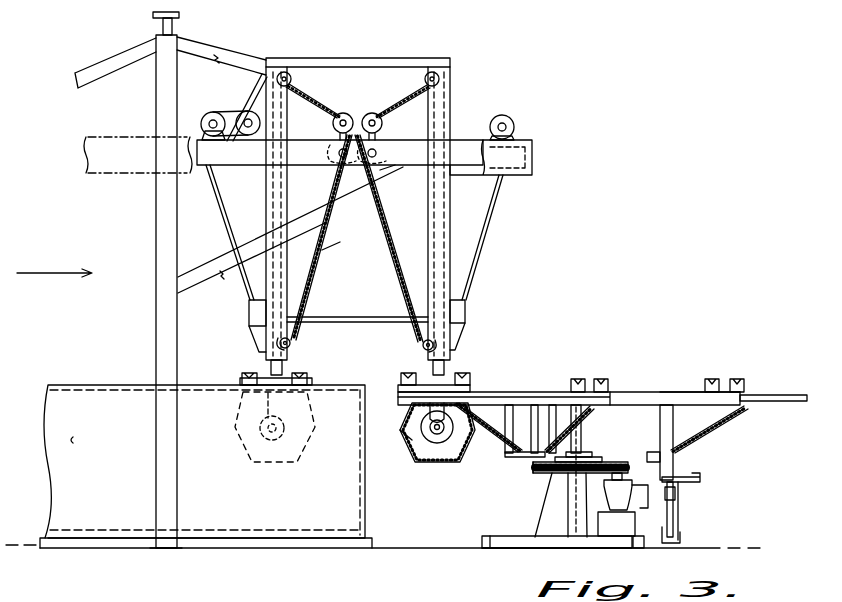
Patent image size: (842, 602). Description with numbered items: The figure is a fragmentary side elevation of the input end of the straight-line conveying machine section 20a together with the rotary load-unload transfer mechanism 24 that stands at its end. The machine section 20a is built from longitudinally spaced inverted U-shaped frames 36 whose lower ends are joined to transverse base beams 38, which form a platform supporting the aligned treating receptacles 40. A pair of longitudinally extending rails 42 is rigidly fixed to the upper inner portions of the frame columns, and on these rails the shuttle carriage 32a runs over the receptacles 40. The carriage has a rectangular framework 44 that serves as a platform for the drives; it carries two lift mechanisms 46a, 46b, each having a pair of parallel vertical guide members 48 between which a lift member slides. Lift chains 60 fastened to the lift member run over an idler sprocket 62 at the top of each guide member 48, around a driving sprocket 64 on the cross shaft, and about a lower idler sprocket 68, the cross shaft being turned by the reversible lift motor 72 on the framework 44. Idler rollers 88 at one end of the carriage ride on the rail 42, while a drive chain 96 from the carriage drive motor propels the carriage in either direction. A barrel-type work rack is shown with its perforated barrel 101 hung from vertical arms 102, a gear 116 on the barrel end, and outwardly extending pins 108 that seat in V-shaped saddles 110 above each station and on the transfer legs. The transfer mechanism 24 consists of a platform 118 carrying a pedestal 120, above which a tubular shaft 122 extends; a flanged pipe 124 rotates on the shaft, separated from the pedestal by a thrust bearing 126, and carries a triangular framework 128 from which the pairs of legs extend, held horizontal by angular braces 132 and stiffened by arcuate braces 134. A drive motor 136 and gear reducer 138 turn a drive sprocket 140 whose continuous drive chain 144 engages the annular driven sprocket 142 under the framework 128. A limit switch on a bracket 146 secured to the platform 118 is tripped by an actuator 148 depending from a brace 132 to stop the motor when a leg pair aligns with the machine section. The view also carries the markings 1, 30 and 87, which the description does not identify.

The direction arrow 1 is at (54, 261).
The straight-line machine section 20a is at (84, 400).
The rotary load-unload transfer mechanism 24 is at (645, 389).
The platform top 30 is at (690, 366).
The shuttle carriage 32a is at (464, 73).
The inverted U-shaped frames 36 is at (168, 195).
The transverse base beams 38 is at (170, 552).
The treating receptacles 40 is at (73, 443).
The longitudinally extending rails 42 is at (115, 127).
The rectangular framework 44 is at (470, 160).
The lift mechanism 46a is at (470, 331).
The lift mechanism 46b is at (250, 322).
The vertical guide members 48 is at (287, 262).
The lift chains 60 is at (325, 250).
The idler sprocket 62 is at (427, 74).
The driving sprocket 64 is at (380, 170).
The idler sprocket 68 is at (305, 328).
The reversible lift motor 72 is at (367, 113).
The pulley 87 is at (205, 113).
The idler rollers 88 is at (512, 118).
The drive chain 96 is at (237, 113).
The perforated barrel 101 is at (412, 460).
The vertical arms 102 is at (424, 421).
The outwardly extending pins 108 is at (248, 372).
The V-shaped saddles 110 is at (243, 378).
The gear 116 is at (415, 440).
The platform 118 is at (653, 545).
The pedestal 120 is at (540, 537).
The tubular shaft 122 is at (590, 433).
The flanged pipe 124 is at (612, 392).
The thrust bearing 126 is at (582, 456).
The triangular framework 128 is at (675, 447).
The angular braces 132 is at (500, 443).
The arcuate braces 134 is at (674, 490).
The drive motor 136 is at (677, 503).
The gear reducer 138 is at (668, 523).
The drive sprocket 140 is at (628, 477).
The driven sprocket 142 is at (546, 488).
The continuous drive chain 144 is at (533, 470).
The bracket 146 is at (683, 540).
The actuator 148 is at (688, 478).